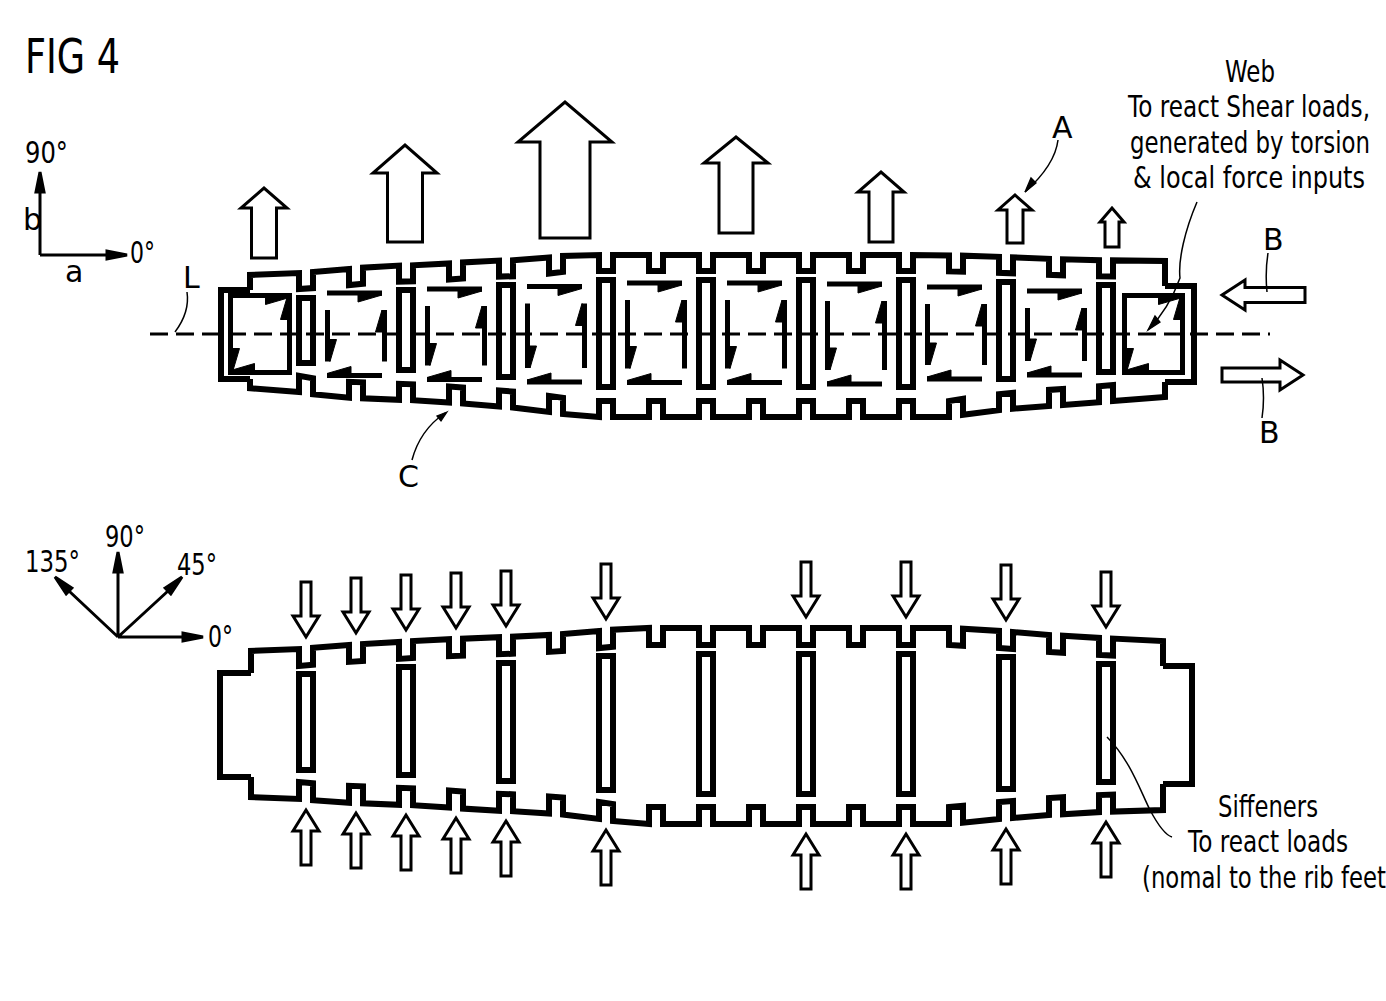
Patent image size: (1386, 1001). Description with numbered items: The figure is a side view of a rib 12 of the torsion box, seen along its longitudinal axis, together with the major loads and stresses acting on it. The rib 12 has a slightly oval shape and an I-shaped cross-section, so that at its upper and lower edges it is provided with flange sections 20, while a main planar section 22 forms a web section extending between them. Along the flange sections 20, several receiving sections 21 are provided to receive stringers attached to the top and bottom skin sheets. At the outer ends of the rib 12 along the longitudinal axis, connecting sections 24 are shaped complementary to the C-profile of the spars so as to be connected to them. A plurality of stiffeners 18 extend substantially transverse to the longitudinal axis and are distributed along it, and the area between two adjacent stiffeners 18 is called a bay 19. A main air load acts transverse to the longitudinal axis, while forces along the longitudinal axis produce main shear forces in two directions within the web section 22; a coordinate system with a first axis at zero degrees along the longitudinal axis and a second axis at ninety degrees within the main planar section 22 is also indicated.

The rib 12 is at (947, 137).
The stiffener 18 is at (1052, 360).
The bay 19 is at (1105, 365).
The flange section 20 is at (680, 252).
The receiving section 21 is at (807, 258).
The main planar section 22 is at (663, 360).
The connecting section 24 is at (218, 333).